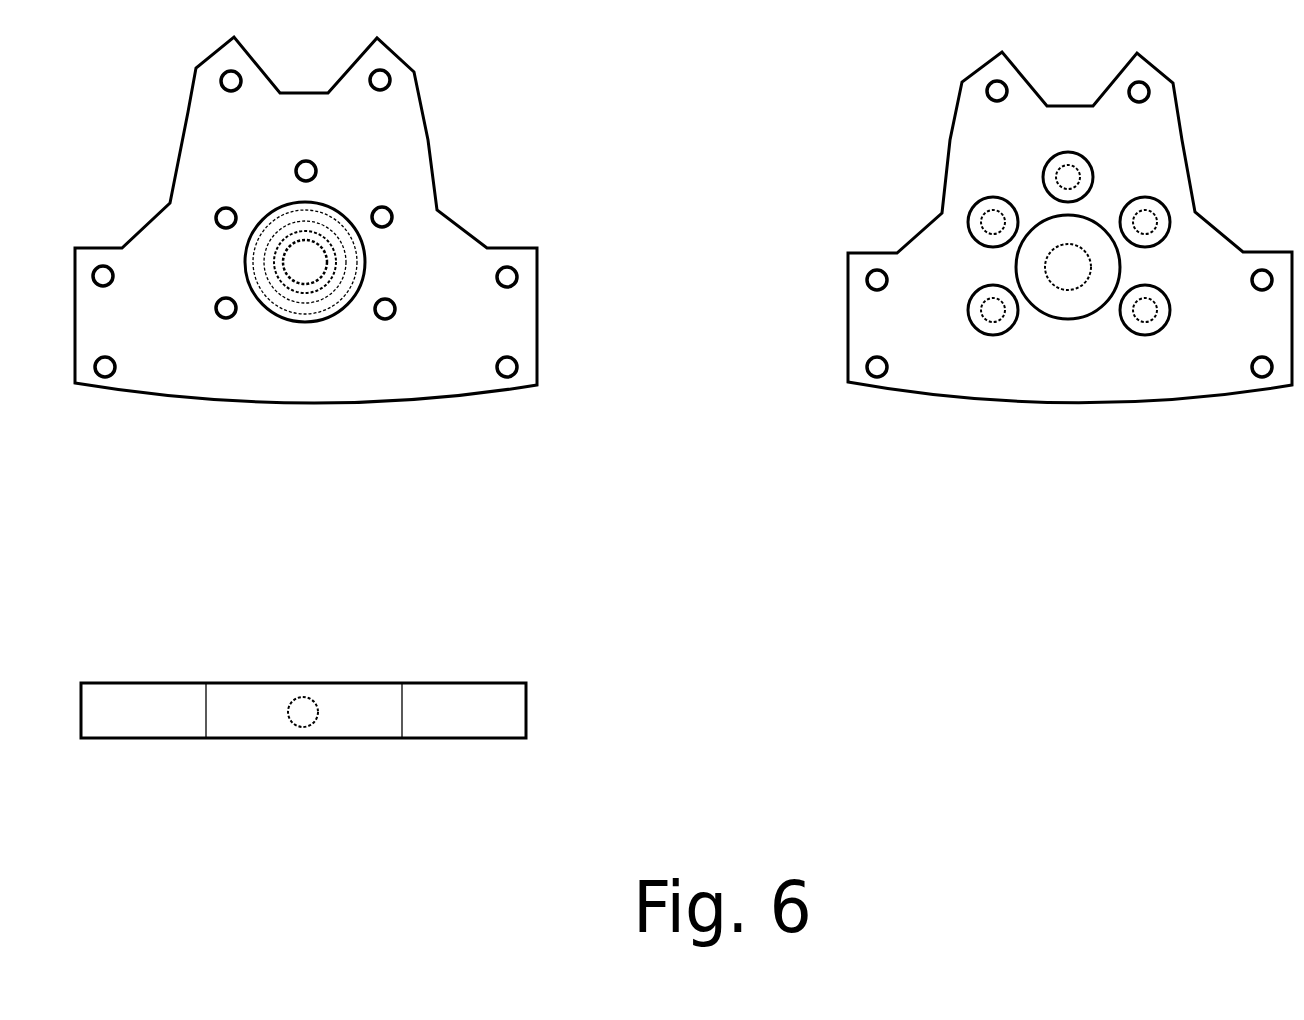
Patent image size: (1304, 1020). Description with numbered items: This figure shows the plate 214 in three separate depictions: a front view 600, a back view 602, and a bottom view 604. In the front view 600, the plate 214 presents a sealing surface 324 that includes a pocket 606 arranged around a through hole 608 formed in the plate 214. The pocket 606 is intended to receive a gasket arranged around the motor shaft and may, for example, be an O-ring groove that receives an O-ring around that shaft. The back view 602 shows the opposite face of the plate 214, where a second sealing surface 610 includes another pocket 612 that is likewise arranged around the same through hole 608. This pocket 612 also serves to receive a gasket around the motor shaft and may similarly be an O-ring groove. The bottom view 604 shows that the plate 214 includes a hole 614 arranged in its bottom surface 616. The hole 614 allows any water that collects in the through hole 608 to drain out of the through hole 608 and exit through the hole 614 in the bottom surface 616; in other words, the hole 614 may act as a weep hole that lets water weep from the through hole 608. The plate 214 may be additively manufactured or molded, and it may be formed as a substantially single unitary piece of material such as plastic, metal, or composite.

The plate 214 is at (150, 48).
The sealing surface 324 is at (445, 227).
The front view 600 is at (306, 248).
The back view 602 is at (1068, 255).
The bottom view 604 is at (303, 727).
The pocket 606 is at (307, 200).
The through hole 608 is at (328, 262).
The sealing surface 610 is at (1200, 243).
The pocket 612 is at (1070, 215).
The hole 614 is at (337, 687).
The bottom surface 616 is at (372, 698).